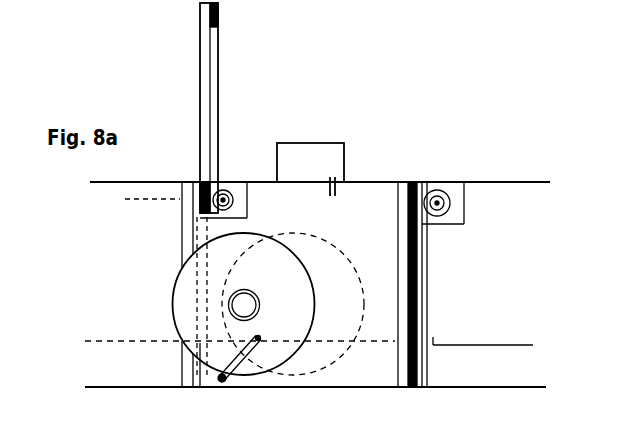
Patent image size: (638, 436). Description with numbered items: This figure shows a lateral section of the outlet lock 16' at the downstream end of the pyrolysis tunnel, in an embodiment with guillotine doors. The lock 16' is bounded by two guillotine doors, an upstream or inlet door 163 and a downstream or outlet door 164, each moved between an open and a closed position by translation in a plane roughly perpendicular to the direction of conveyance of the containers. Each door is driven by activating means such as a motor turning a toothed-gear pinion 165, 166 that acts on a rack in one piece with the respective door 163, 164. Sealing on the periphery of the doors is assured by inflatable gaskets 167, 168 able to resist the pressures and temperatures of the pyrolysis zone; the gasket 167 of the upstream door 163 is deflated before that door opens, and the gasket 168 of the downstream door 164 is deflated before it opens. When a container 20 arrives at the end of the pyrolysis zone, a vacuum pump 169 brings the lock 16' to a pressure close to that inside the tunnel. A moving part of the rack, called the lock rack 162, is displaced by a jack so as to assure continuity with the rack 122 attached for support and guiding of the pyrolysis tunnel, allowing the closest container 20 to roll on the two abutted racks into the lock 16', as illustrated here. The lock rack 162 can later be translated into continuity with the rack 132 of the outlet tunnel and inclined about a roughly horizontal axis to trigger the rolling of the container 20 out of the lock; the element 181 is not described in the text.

The outlet lock 16' is at (456, 78).
The container 20 is at (185, 295).
The rack 122 is at (107, 323).
The rack 132 is at (495, 343).
The lock rack 162 is at (363, 340).
The guillotine door 163 is at (205, 68).
The guillotine door 164 is at (417, 270).
The toothed-gear pinion 165 is at (221, 199).
The toothed-gear pinion 166 is at (447, 183).
The inflatable gasket 167 is at (195, 358).
The inflatable gasket 168 is at (410, 353).
The vacuum pump 169 is at (308, 152).
The pivot link 181 is at (228, 382).